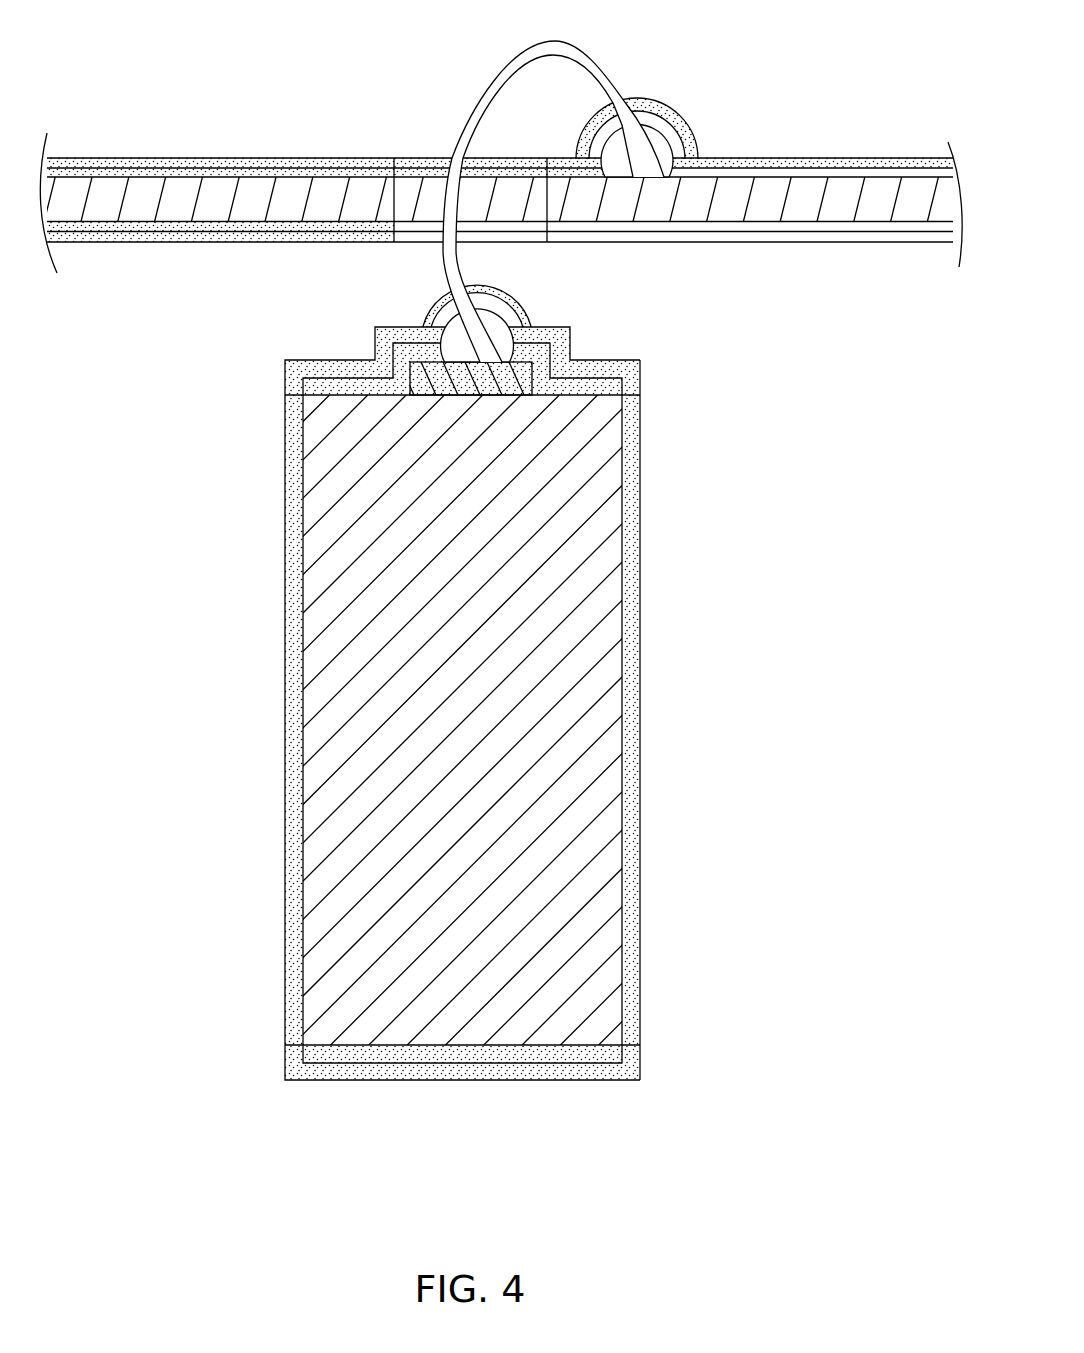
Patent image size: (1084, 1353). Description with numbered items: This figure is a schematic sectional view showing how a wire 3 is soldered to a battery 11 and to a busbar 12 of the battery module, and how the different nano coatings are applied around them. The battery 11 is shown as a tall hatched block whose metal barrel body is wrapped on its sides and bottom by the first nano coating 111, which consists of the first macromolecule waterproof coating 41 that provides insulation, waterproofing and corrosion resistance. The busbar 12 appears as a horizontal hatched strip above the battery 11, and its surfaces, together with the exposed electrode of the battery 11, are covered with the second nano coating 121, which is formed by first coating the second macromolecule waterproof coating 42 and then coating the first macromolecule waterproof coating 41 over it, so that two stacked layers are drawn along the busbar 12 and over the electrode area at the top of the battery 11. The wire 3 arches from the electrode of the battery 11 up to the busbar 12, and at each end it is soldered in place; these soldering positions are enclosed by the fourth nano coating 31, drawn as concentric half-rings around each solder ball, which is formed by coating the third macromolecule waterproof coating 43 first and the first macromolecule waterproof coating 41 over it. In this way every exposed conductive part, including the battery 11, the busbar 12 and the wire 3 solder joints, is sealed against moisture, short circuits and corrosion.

The wire 3 is at (515, 67).
The battery 11 is at (585, 600).
The first nano coating 111 is at (778, 724).
The busbar 12 is at (338, 195).
The second nano coating 121 is at (500, 630).
The fourth nano coating 31 is at (595, 181).
The first macromolecule waterproof coating 41 is at (203, 162).
The second macromolecule waterproof coating 42 is at (190, 88).
The third macromolecule waterproof coating 43 is at (680, 143).